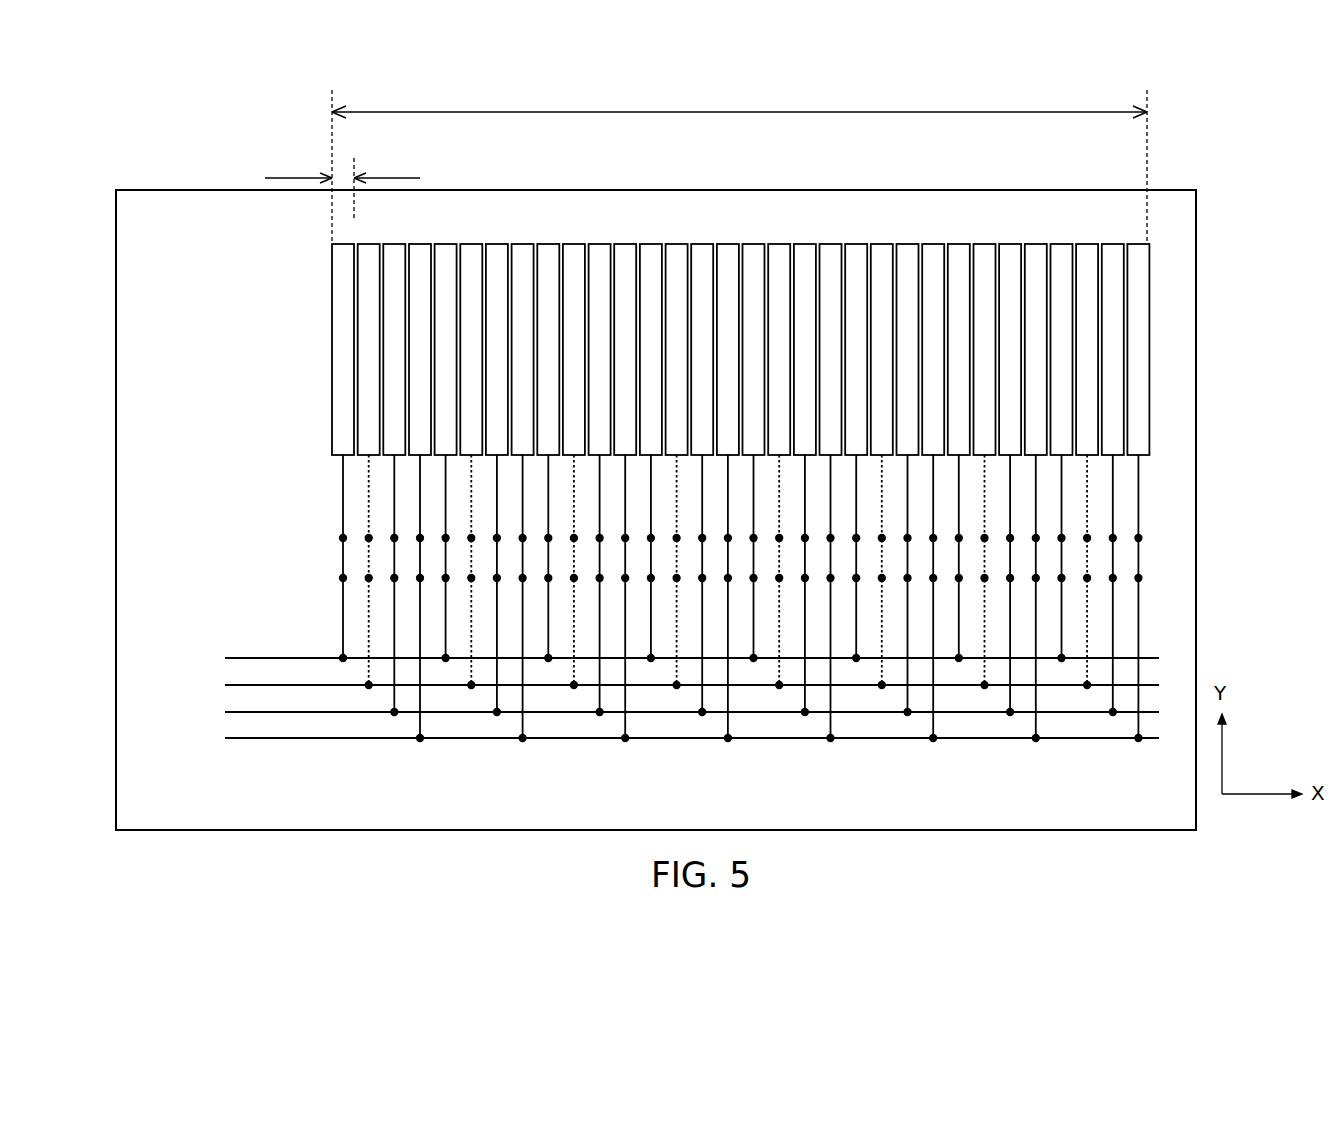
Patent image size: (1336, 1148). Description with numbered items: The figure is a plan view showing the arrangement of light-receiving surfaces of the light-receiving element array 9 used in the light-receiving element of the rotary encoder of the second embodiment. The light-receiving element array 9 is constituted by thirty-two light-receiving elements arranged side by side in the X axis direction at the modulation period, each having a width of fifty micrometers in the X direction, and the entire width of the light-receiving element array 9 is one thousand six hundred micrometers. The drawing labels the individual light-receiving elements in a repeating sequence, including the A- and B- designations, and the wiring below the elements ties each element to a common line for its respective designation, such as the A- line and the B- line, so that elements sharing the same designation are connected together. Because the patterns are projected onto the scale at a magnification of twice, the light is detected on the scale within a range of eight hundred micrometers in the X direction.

The light-receiving element array 9 is at (673, 469).
The A- phase electrode wiring A- is at (672, 587).
The B- phase electrode wiring B- is at (672, 600).